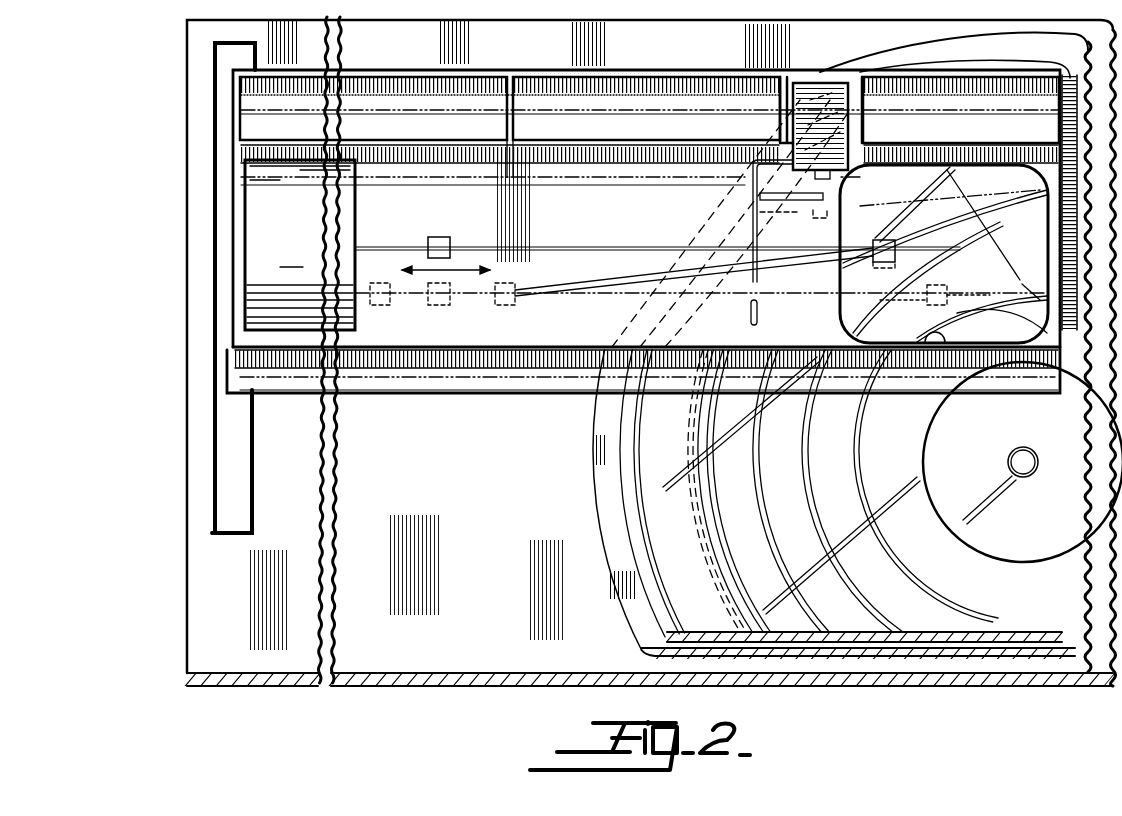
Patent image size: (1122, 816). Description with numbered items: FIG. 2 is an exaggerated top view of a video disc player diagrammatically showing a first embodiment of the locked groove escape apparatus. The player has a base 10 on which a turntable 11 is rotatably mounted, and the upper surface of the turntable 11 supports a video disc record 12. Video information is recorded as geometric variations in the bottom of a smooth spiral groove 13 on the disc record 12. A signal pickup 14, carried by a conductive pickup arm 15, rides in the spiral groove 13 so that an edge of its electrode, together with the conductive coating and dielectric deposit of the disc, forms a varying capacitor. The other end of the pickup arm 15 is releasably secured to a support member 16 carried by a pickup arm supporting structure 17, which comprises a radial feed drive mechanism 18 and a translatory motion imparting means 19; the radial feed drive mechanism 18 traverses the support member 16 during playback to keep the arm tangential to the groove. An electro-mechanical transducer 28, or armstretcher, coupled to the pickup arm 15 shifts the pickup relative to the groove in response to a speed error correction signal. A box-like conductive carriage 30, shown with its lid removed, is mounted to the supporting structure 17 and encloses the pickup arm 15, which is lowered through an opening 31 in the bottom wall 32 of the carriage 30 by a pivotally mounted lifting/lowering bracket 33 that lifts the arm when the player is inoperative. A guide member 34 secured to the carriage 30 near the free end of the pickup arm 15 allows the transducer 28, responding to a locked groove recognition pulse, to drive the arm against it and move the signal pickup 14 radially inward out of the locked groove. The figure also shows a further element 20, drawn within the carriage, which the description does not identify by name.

The base 10 is at (187, 663).
The turntable 11 is at (595, 490).
The video disc record 12 is at (632, 425).
The spiral groove 13 is at (756, 490).
The signal pickup 14 is at (978, 255).
The pickup arm 15 is at (600, 270).
The support member 16 is at (441, 237).
The pickup arm supporting structure 17 is at (228, 102).
The radial feed drive mechanism 18 is at (226, 290).
The translatory motion imparting means 19 is at (297, 255).
The cable guides 20 is at (900, 240).
The electro-mechanical transducer 28 is at (357, 218).
The carriage 30 is at (413, 392).
The opening 31 is at (943, 350).
The bottom wall 32 is at (605, 330).
The lifting/lowering bracket 33 is at (757, 226).
The guide member 34 is at (988, 225).